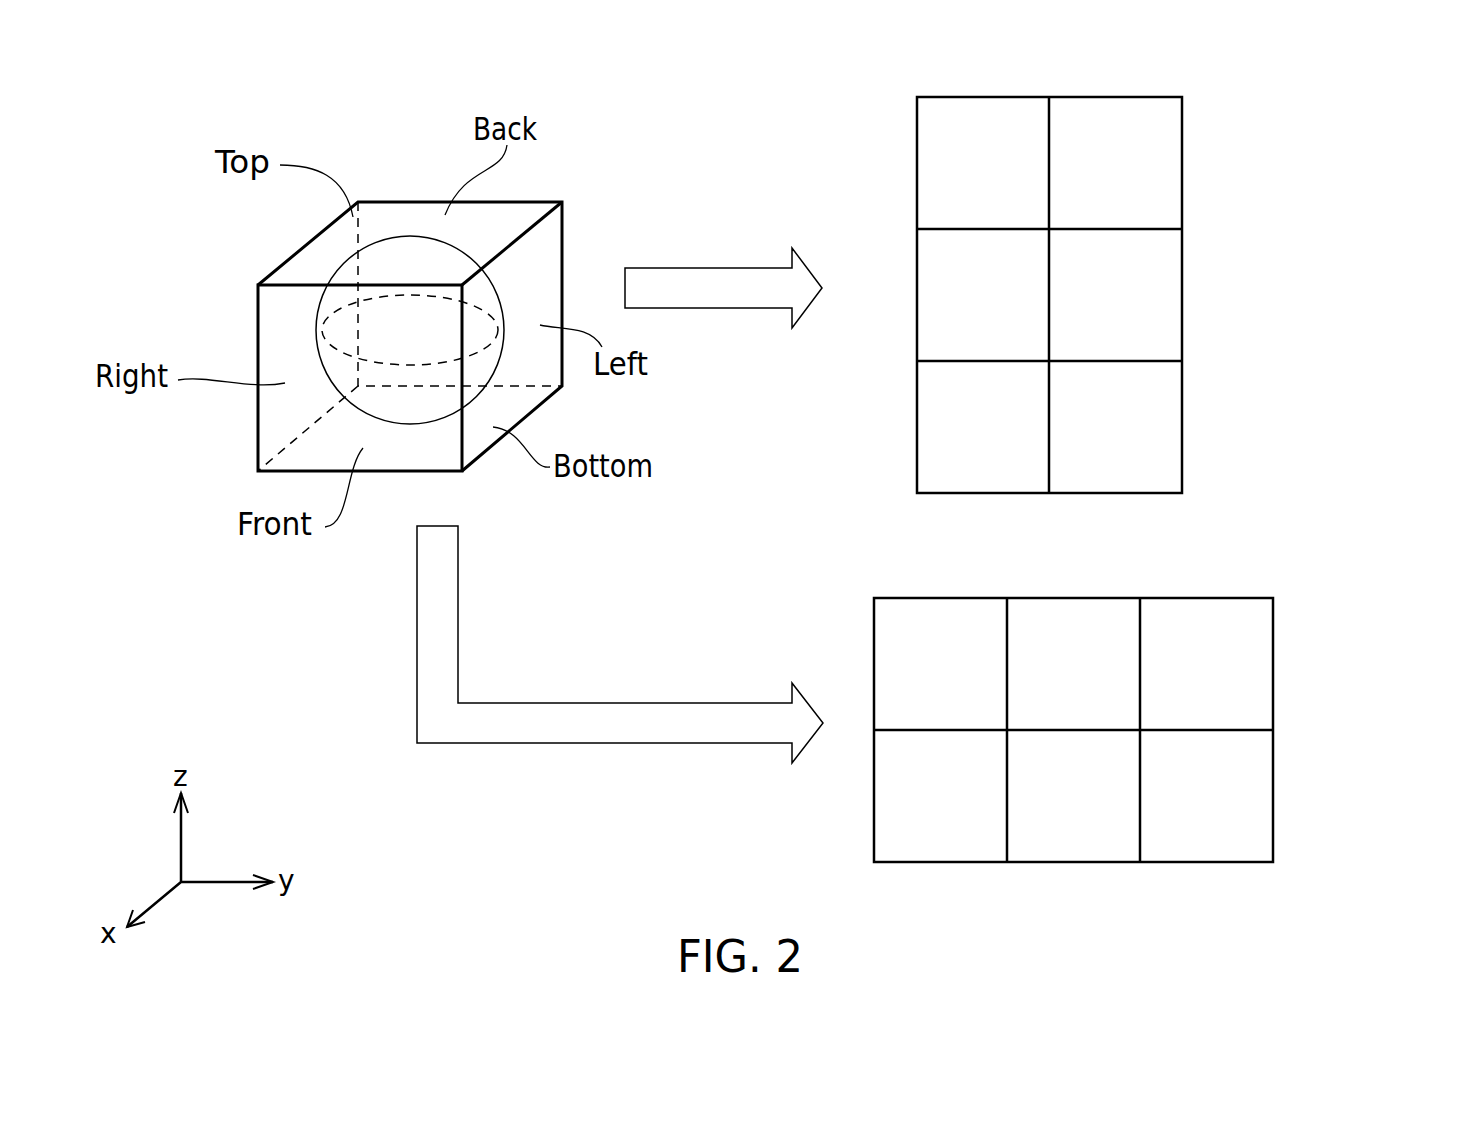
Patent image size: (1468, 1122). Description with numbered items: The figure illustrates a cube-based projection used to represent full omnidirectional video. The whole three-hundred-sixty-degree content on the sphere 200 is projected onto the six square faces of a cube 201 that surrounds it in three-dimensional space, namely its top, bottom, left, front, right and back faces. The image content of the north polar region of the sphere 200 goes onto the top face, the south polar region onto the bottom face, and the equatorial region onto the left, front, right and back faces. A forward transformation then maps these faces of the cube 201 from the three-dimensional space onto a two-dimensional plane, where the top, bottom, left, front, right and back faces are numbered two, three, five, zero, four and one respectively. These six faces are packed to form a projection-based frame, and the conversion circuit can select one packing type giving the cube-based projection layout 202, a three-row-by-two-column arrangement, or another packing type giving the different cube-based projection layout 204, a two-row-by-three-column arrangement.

The sphere 200 is at (412, 235).
The cube 201 is at (462, 472).
The cube-based projection layout 202 is at (1250, 135).
The cube-based projection layout 204 is at (1305, 640).